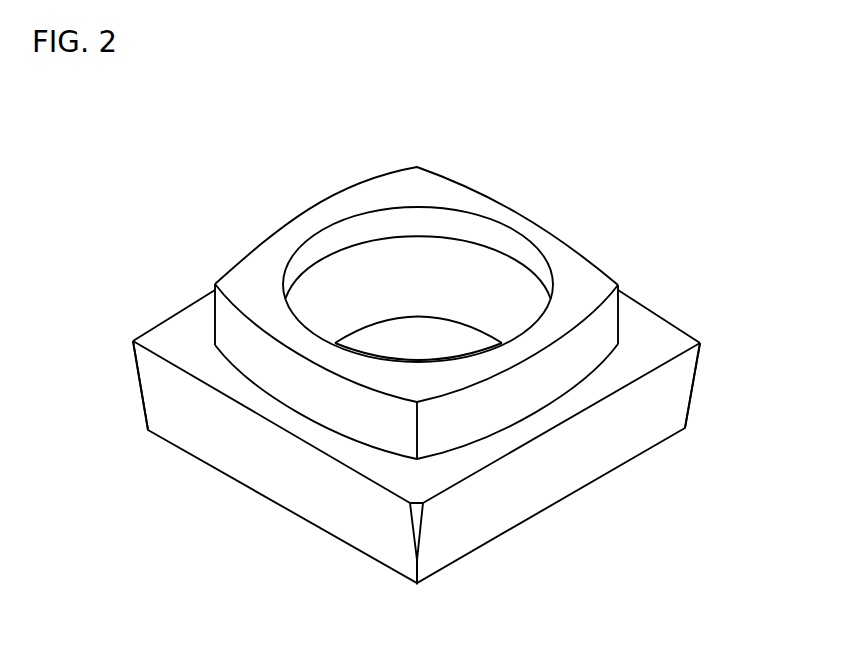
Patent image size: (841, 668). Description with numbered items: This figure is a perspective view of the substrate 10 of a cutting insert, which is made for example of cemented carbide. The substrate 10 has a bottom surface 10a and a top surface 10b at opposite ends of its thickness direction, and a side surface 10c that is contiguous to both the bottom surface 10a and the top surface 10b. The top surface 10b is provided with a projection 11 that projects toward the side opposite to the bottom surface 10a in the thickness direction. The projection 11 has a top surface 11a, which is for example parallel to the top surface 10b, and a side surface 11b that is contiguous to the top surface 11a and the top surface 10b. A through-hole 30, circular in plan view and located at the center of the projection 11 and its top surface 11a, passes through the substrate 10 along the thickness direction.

The substrate 10 is at (694, 124).
The bottom surface 10a is at (523, 523).
The top surface 10b is at (647, 340).
The side surface 10c is at (272, 474).
The projection 11 is at (321, 198).
The top surface 11a is at (576, 268).
The side surface 11b is at (225, 325).
The through-hole 30 is at (493, 242).